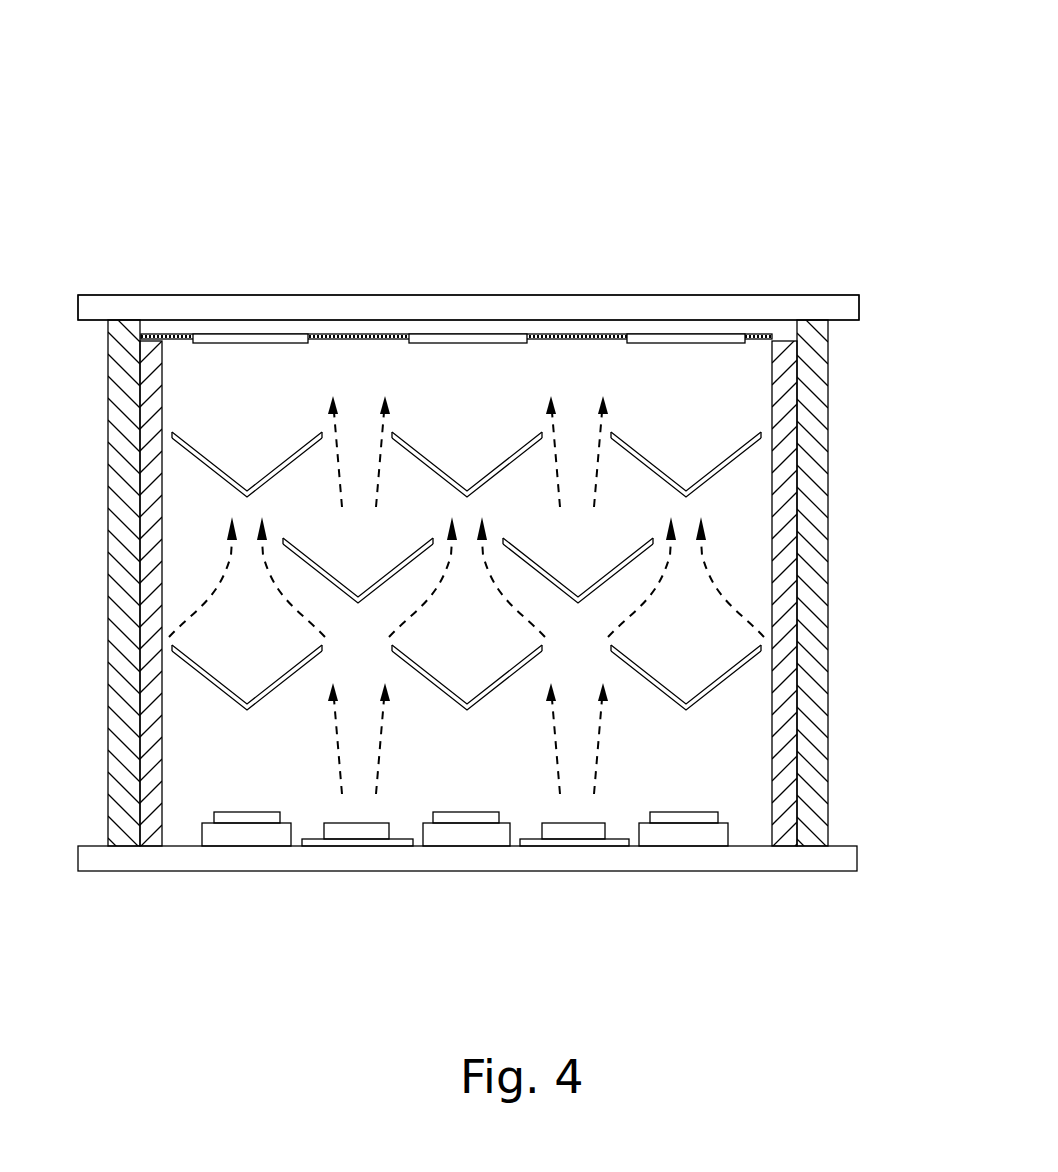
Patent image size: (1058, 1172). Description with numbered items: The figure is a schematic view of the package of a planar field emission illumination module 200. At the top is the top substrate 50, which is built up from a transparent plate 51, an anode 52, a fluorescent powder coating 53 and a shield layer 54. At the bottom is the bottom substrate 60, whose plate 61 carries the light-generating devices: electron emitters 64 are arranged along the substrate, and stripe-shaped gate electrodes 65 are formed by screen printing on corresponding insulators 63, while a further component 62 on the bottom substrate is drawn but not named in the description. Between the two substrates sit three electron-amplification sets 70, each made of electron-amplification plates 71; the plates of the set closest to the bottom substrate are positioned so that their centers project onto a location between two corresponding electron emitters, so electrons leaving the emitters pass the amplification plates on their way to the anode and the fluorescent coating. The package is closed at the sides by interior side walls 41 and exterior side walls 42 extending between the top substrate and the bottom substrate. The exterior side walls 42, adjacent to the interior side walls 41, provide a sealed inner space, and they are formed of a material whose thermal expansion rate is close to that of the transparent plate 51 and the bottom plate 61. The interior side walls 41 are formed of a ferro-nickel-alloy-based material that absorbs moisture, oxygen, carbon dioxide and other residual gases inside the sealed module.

The planar field emission illumination module 200 is at (250, 80).
The top substrate 50 is at (477, 248).
The transparent plate 51 is at (205, 306).
The anode 52 is at (264, 329).
The fluorescent powder coating 53 is at (357, 336).
The shield layer 54 is at (471, 338).
The interior side wall 41 is at (150, 622).
The exterior side wall 42 is at (122, 675).
The electron-amplification set 70 is at (564, 572).
The electron-amplification plate 71 is at (740, 460).
The bottom substrate 60 is at (720, 932).
The plate 61 is at (448, 860).
The first light emitting package 62 is at (597, 843).
The insulator 63 is at (710, 840).
The electron emitter 64 is at (553, 832).
The gate electrode 65 is at (667, 818).